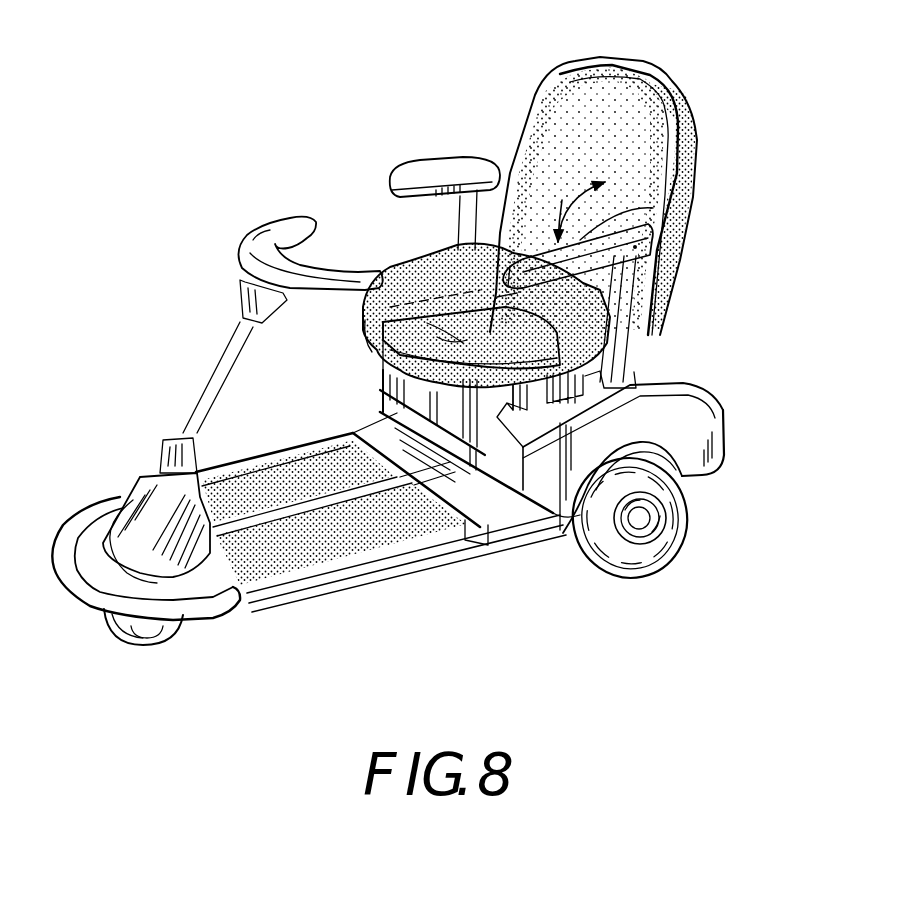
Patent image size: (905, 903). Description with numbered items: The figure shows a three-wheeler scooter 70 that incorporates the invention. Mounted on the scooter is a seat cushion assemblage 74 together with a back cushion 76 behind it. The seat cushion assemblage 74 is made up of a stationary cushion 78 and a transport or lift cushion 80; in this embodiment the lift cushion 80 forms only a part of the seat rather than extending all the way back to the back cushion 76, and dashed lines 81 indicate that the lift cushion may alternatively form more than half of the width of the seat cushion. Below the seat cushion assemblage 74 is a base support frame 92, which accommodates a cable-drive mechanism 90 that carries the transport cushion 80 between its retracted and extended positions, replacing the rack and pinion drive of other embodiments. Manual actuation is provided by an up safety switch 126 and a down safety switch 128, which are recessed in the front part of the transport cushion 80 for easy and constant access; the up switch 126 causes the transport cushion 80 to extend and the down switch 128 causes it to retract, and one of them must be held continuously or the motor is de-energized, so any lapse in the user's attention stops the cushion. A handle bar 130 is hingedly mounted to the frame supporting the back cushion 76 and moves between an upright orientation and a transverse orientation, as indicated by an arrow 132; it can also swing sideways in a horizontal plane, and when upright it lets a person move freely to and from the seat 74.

The three-wheeler scooter 70 is at (205, 362).
The seat cushion assemblage 74 is at (392, 230).
The back cushion 76 is at (583, 90).
The stationary cushion 78 is at (470, 273).
The transport or lift cushion 80 is at (365, 328).
The dashed lines 81 is at (450, 303).
The cable-drive mechanism 90 is at (481, 410).
The base support frame 92 is at (492, 388).
The up safety switch 126 is at (395, 414).
The down safety switch 128 is at (337, 433).
The handle bar 130 is at (653, 209).
The arrow 132 is at (568, 202).